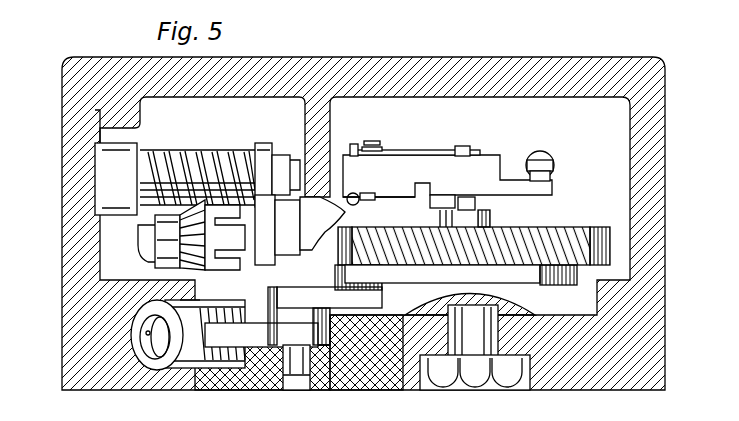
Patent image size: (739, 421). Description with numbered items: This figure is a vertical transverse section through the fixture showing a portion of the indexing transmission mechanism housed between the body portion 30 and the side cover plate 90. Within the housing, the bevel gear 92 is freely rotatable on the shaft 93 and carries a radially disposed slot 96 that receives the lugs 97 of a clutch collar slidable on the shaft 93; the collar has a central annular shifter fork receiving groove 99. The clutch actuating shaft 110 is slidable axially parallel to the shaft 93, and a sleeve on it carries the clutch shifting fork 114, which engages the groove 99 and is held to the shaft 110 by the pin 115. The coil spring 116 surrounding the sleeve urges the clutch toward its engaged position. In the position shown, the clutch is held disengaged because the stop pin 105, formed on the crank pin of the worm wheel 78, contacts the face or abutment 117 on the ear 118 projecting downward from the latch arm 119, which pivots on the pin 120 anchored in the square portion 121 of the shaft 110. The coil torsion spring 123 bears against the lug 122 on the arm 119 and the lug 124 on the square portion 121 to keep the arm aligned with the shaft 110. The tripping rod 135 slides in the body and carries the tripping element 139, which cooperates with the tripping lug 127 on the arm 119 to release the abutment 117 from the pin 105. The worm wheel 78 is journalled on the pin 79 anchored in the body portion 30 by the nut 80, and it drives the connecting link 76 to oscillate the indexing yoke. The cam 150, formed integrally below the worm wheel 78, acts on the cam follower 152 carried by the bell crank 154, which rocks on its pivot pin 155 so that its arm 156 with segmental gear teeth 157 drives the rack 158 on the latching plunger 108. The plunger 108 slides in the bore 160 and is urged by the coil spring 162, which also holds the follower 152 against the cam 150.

The body portion 30 is at (652, 214).
The side cover plate 90 is at (78, 89).
The latching plunger 108 is at (186, 352).
The coil spring 116 is at (172, 152).
The clutch shifting fork 114 is at (262, 156).
The pin 115 is at (282, 172).
The shifter fork receiving groove 99 is at (262, 238).
The shaft 110 is at (293, 198).
The shaft 93 is at (150, 242).
The bevel gear 92 is at (181, 228).
The lugs 97 is at (207, 232).
The radially disposed slot 96 is at (217, 254).
The rack 158 is at (212, 305).
The coil spring 162 is at (148, 348).
The bore 160 is at (178, 300).
The segmental gear teeth 157 is at (208, 345).
The arm 156 is at (316, 297).
The bell crank 154 is at (265, 344).
The pivot pin 155 is at (296, 366).
The cam follower 152 is at (338, 280).
The worm wheel 78 is at (585, 233).
The cam 150 is at (545, 278).
The latch arm 119 is at (486, 167).
The square portion 121 is at (377, 191).
The coil torsion spring 123 is at (404, 150).
The lug 124 is at (355, 145).
The lug 122 is at (462, 148).
The tripping rod 135 is at (541, 154).
The tripping element 139 is at (550, 164).
The tripping lug 127 is at (551, 178).
The pin 120 is at (361, 192).
The ear 118 is at (441, 201).
The stop pin 105 is at (478, 204).
The face or abutment 117 is at (440, 215).
The connecting link 76 is at (492, 218).
The pin 79 is at (478, 347).
The nut 80 is at (432, 377).